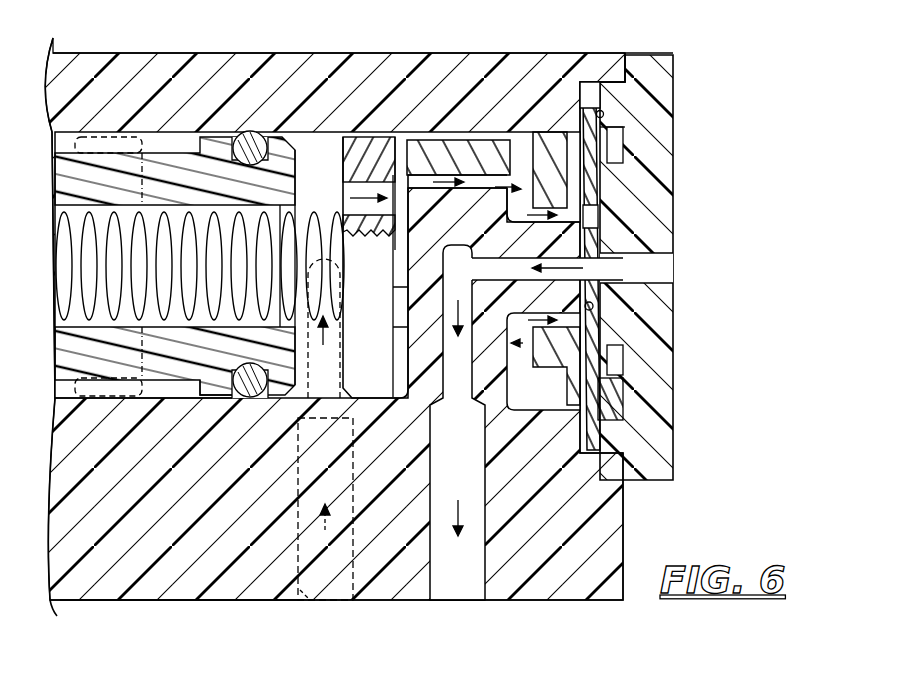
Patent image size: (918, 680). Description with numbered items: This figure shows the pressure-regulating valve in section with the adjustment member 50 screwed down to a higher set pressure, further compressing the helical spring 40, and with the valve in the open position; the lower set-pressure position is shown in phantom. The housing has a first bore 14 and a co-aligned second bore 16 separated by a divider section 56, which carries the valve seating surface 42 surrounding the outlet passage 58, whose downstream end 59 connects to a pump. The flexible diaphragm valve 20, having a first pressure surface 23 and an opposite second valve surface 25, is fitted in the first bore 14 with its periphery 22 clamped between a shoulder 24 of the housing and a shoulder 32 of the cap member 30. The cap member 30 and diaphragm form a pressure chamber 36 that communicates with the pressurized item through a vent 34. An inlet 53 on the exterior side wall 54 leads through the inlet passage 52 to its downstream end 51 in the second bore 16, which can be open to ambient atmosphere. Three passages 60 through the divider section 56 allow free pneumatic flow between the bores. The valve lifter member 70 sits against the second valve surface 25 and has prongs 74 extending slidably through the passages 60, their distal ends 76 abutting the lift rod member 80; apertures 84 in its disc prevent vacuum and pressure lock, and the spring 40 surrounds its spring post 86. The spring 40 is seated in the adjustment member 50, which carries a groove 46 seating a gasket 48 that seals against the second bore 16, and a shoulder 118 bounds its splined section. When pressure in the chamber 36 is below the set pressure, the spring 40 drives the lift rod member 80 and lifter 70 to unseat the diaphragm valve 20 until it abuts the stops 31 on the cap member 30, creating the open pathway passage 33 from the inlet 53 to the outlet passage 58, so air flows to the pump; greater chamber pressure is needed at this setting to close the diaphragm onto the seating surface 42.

The first bore 14 is at (560, 418).
The second bore 16 is at (313, 265).
The flexible diaphragm valve 20 is at (597, 387).
The periphery 22 is at (590, 83).
The first pressure surface 23 is at (623, 260).
The shoulder 24 is at (582, 110).
The second valve surface 25 is at (587, 317).
The cap member 30 is at (670, 107).
The stops 31 is at (610, 355).
The shoulder 32 is at (603, 115).
The open pathway passage 33 is at (585, 227).
The vent 34 is at (657, 273).
The pressure chamber 36 is at (618, 147).
The helical spring 40 is at (57, 333).
The valve seating surface 42 is at (585, 292).
The groove 46 is at (228, 396).
The gasket 48 is at (248, 385).
The adjustment member 50 is at (218, 163).
The downstream end 51 is at (323, 350).
The inlet passage 52 is at (289, 601).
The inlet 53 is at (323, 600).
The exterior side wall 54 is at (168, 601).
The divider section 56 is at (435, 203).
The outlet passage 58 is at (457, 422).
The downstream end 59 is at (460, 601).
The passages 60 is at (415, 185).
The valve lifter member 70 is at (577, 192).
The prongs 74 is at (405, 157).
The distal ends 76 is at (352, 138).
The lift rod member 80 is at (358, 148).
The apertures 84 is at (360, 195).
The spring post 86 is at (60, 276).
The shoulder 118 is at (200, 393).